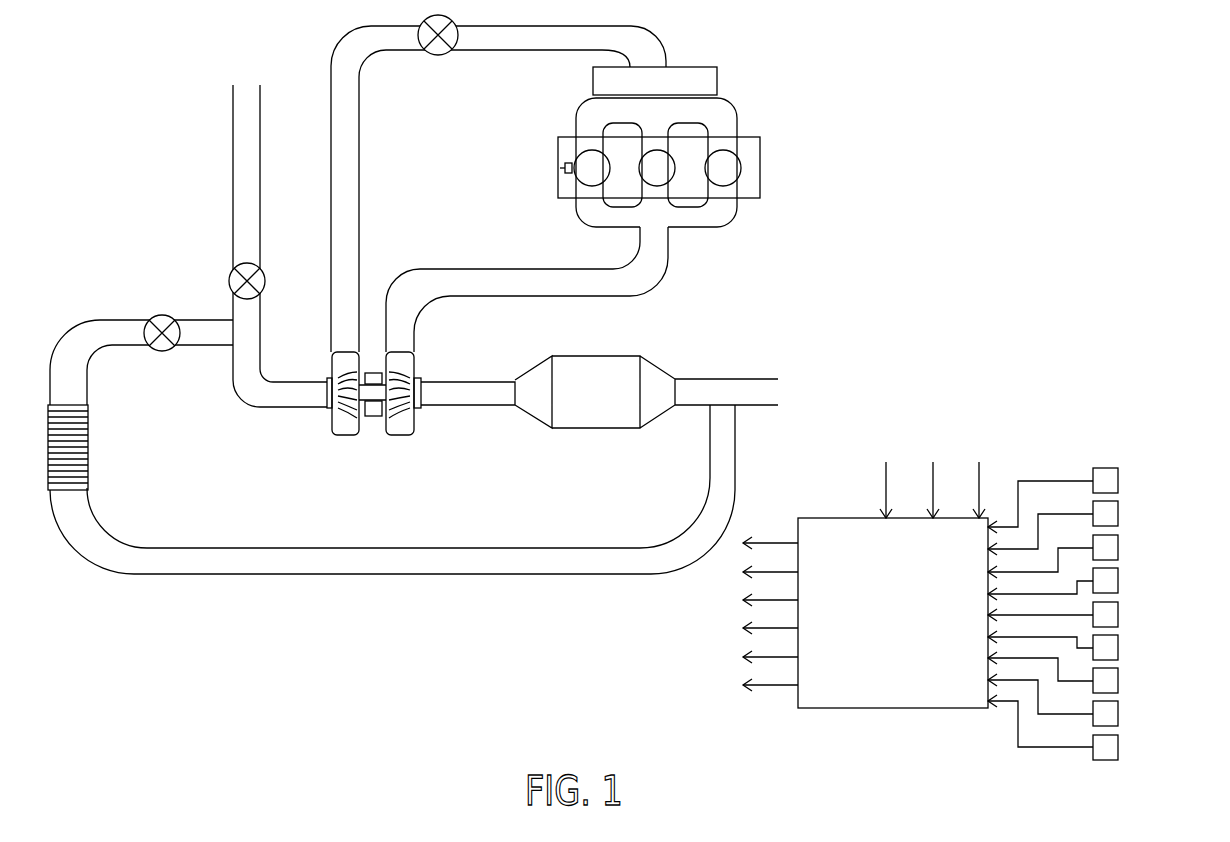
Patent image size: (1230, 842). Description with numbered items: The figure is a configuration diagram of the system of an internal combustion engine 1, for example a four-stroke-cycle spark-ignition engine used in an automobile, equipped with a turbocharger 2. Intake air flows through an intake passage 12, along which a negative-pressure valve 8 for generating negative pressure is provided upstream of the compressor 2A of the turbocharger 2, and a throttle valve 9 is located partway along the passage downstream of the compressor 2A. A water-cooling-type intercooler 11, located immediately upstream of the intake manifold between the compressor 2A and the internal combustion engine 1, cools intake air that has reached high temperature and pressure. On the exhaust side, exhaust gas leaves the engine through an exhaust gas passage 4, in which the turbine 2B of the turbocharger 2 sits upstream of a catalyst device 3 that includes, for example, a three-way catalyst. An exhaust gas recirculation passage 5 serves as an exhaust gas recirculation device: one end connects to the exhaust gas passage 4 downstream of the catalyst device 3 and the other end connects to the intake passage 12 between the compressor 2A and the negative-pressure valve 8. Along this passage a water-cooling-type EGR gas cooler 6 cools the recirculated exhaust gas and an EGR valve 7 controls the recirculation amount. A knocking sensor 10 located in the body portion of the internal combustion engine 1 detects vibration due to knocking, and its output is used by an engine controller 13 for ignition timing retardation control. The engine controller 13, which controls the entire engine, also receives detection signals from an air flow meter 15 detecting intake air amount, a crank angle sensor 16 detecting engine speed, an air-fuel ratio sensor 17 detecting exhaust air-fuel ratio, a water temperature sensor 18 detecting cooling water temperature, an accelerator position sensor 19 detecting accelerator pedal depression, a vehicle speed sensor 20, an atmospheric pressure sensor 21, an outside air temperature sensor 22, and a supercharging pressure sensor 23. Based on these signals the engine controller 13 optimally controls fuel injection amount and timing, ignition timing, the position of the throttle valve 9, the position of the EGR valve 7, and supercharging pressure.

The internal combustion engine 1 is at (763, 212).
The turbocharger 2 is at (376, 441).
The compressor 2A is at (345, 435).
The turbine 2B is at (370, 436).
The catalyst device 3 is at (592, 410).
The exhaust gas passage 4 is at (595, 285).
The exhaust gas recirculation passage 5 is at (443, 563).
The EGR gas cooler 6 is at (88, 455).
The EGR valve 7 is at (158, 352).
The negative-pressure valve 8 is at (235, 275).
The throttle valve 9 is at (438, 55).
The knocking sensor 10 is at (562, 168).
The intercooler 11 is at (720, 83).
The intake passage 12 is at (350, 180).
The engine controller 13 is at (900, 693).
The air flow meter 15 is at (1119, 481).
The crank angle sensor 16 is at (1119, 514).
The air-fuel ratio sensor 17 is at (1119, 548).
The water temperature sensor 18 is at (1119, 581).
The accelerator position sensor 19 is at (1119, 615).
The vehicle speed sensor 20 is at (1119, 648).
The atmospheric pressure sensor 21 is at (1119, 681).
The outside air temperature sensor 22 is at (1119, 714).
The supercharging pressure sensor 23 is at (1119, 747).